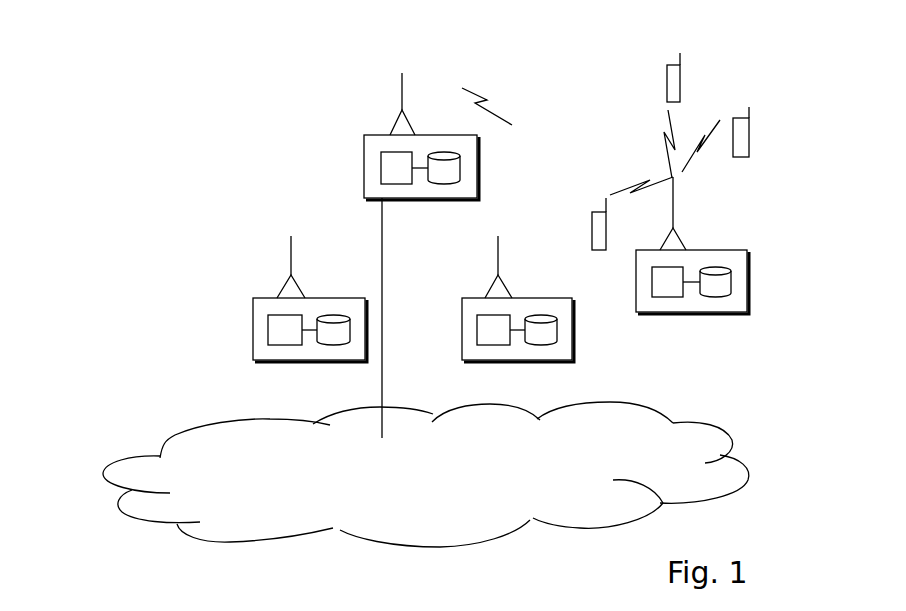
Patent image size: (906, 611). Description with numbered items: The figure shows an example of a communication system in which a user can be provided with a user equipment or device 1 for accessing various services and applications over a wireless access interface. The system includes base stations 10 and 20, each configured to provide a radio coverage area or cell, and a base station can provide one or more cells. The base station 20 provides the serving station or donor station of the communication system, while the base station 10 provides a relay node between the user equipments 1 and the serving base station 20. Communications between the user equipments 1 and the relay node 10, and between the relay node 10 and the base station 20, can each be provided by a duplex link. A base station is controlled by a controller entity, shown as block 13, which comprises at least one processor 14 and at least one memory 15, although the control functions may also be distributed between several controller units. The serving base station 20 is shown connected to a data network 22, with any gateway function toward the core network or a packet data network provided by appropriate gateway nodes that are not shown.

The user equipment 1 is at (672, 88).
The base station 10 is at (722, 302).
The controller 13 is at (394, 183).
The processor 14 is at (436, 178).
The memory 15 is at (380, 197).
The serving base station 20 is at (395, 86).
The data network 22 is at (170, 437).